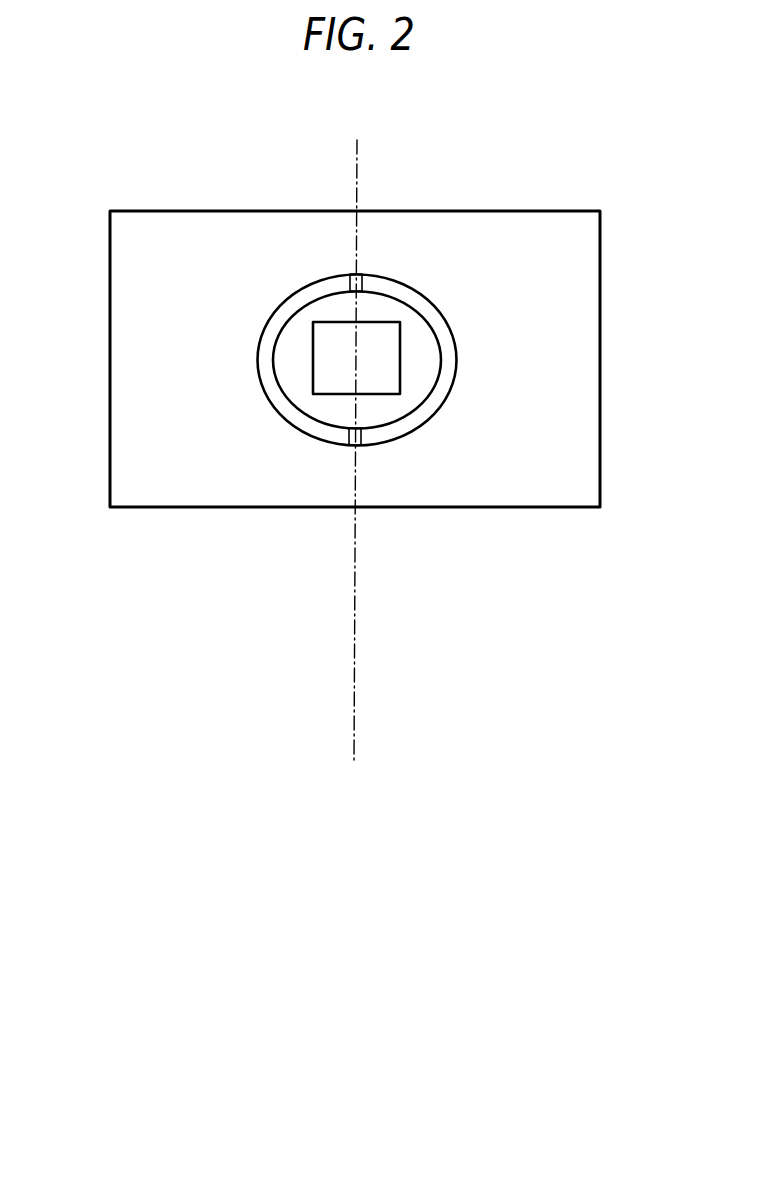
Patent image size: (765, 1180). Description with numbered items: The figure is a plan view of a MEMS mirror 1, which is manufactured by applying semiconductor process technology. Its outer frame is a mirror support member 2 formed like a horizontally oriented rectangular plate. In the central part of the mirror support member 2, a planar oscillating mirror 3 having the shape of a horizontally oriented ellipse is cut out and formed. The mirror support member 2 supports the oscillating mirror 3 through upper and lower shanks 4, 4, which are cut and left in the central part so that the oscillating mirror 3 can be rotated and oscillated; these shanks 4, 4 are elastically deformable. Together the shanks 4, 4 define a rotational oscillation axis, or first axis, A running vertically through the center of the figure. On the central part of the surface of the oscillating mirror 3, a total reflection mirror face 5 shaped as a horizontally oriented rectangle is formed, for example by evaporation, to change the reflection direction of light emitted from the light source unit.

The MEMS mirror 1 is at (349, 343).
The mirror support member 2 is at (109, 332).
The oscillating mirror 3 is at (273, 352).
The shank 4 is at (360, 282).
The total reflection mirror face 5 is at (378, 358).
The rotational oscillation axis A is at (357, 172).